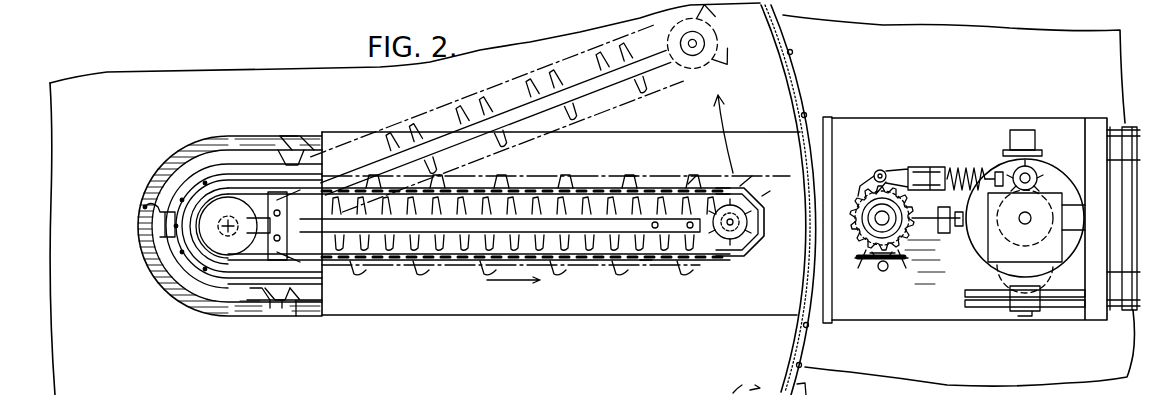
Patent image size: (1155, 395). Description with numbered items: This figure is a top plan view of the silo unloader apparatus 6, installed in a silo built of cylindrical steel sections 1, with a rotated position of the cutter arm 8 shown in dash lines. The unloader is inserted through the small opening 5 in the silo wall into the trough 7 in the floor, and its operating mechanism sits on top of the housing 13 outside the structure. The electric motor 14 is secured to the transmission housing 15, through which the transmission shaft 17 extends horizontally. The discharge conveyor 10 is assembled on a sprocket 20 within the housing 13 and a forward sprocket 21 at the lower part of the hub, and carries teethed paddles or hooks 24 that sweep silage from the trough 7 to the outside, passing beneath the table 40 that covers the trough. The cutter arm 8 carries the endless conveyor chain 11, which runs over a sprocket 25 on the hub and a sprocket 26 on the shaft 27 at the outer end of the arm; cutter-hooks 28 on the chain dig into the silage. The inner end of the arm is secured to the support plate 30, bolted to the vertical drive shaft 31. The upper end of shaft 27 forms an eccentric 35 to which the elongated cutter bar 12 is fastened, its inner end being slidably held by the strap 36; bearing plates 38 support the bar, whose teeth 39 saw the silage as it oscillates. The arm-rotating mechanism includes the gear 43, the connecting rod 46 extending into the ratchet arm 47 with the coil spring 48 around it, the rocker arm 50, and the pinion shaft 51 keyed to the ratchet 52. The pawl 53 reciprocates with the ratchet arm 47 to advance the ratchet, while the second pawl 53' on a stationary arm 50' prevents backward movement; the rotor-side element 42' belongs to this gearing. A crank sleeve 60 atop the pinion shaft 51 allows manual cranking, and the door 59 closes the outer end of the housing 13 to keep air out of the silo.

The cylindrical steel sections 1 is at (785, 72).
The opening 5 is at (817, 148).
The unloader apparatus 6 is at (604, 177).
The trough 7 is at (303, 310).
The cutter arm 8 is at (580, 250).
The discharge conveyor 10 is at (237, 184).
The endless conveyor chain 11 is at (652, 259).
The cutter bar 12 is at (521, 222).
The housing 13 is at (900, 128).
The electric motor 14 is at (1060, 245).
The transmission housing 15 is at (1063, 180).
The transmission shaft 17 is at (1025, 130).
The sprocket 20 is at (983, 265).
The sprocket 21 is at (193, 257).
The teethed paddles or hooks 24 is at (145, 207).
The sprocket 25 is at (200, 267).
The sprocket 26 is at (770, 191).
The shaft 27 is at (743, 187).
The cutter-hooks 28 is at (692, 182).
The support plate 30 is at (218, 210).
The vertical drive shaft 31 is at (217, 227).
The eccentric 35 is at (727, 232).
The strap 36 is at (283, 213).
The bearing plates 38 is at (402, 240).
The teeth 39 is at (463, 242).
The table 40 is at (768, 298).
The motor rotor 42' is at (1025, 241).
The gear 43 is at (1030, 177).
The connecting rod 46 is at (998, 177).
The ratchet arm 47 is at (905, 163).
The coil spring 48 is at (967, 175).
The rocker arm 50 is at (844, 218).
The lower ratchet pawl 50' is at (880, 277).
The pinion shaft 51 is at (915, 214).
The ratchet 52 is at (850, 237).
The pawl 53 is at (869, 165).
The second pawl 53' is at (888, 275).
The door 59 is at (1127, 310).
The crank sleeve 60 is at (895, 222).